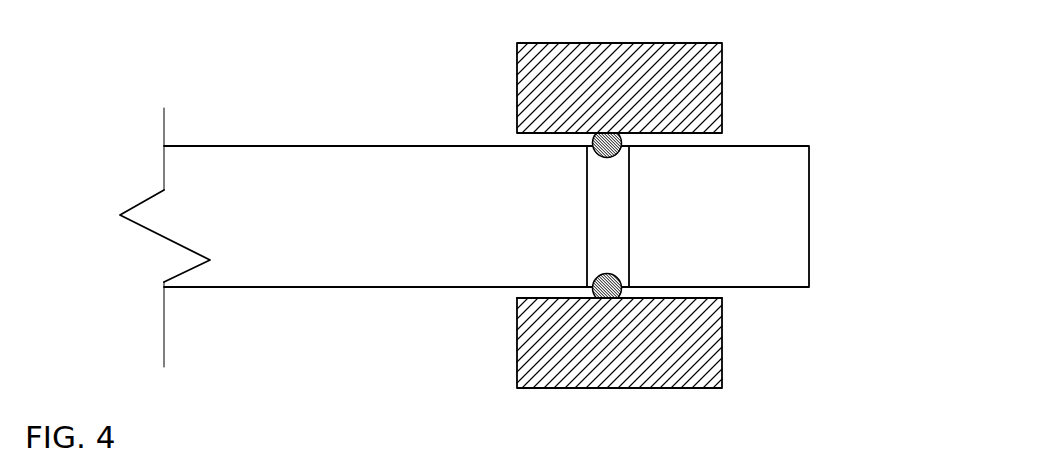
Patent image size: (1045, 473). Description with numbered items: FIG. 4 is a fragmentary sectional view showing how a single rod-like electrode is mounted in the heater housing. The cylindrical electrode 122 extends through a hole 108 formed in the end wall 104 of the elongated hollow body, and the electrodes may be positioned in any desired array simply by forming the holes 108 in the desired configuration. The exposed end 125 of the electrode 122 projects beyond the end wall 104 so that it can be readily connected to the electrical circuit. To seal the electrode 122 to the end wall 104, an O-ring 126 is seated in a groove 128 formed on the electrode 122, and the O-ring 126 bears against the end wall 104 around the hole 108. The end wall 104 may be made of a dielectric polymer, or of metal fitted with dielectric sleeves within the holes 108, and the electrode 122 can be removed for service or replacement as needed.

The cylindrical electrode 122 is at (343, 146).
The exposed end of the electrode 125 is at (776, 238).
The O-ring 126 is at (633, 130).
The groove 128 is at (613, 218).
The end wall 104 is at (508, 369).
The hole 108 is at (515, 296).